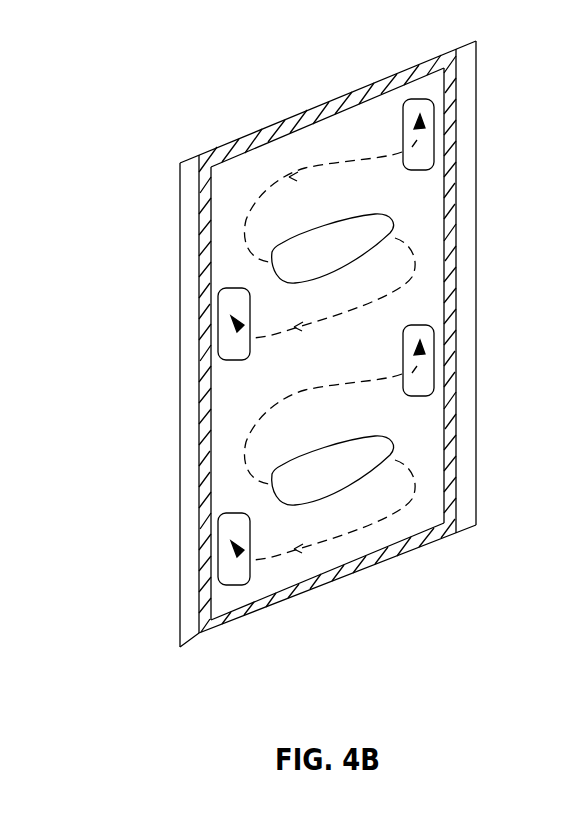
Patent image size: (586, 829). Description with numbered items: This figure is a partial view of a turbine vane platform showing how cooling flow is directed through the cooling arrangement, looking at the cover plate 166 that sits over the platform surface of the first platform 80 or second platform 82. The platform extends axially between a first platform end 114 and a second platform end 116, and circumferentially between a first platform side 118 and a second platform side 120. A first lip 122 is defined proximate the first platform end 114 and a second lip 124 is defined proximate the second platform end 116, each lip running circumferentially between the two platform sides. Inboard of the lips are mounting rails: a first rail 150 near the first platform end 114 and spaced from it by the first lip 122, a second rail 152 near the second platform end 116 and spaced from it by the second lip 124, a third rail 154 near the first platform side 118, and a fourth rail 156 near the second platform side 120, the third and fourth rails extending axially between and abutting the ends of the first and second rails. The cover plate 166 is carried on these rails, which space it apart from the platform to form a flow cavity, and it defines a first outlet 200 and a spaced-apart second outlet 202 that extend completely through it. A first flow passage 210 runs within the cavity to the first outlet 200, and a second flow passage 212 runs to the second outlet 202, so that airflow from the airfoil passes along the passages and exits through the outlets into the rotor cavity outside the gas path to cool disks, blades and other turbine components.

The first platform 80 is at (320, 339).
The second platform 82 is at (320, 339).
The first platform end 114 is at (180, 440).
The second platform end 116 is at (478, 302).
The first platform side 118 is at (267, 126).
The second platform side 120 is at (304, 597).
The first lip 122 is at (205, 492).
The second lip 124 is at (460, 368).
The first rail 150 is at (185, 382).
The second rail 152 is at (452, 468).
The third rail 154 is at (207, 167).
The fourth rail 156 is at (372, 562).
The cover plate 166 is at (353, 135).
The first outlet 200 is at (218, 328).
The second outlet 202 is at (437, 142).
The first flow passage 210 is at (297, 327).
The second flow passage 212 is at (295, 177).